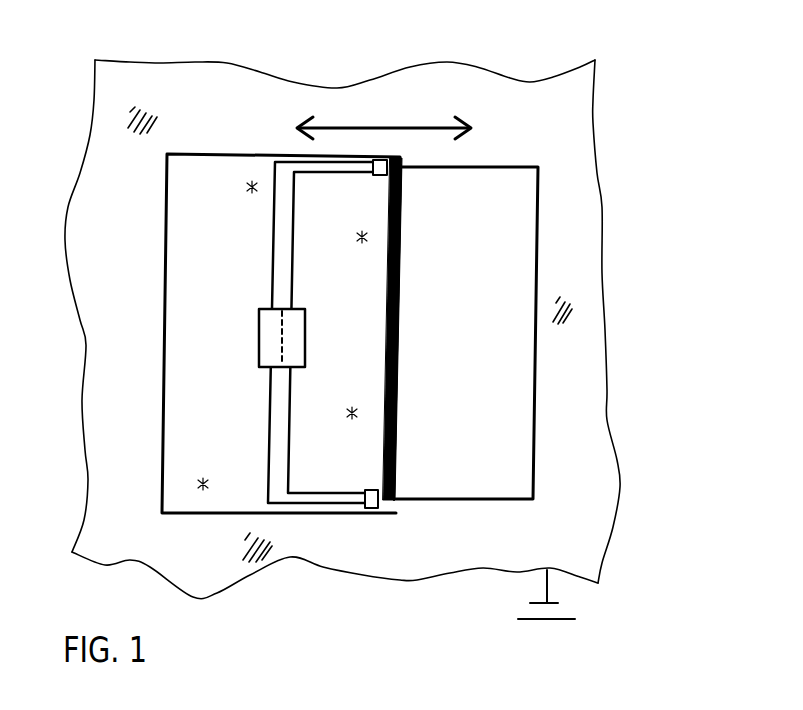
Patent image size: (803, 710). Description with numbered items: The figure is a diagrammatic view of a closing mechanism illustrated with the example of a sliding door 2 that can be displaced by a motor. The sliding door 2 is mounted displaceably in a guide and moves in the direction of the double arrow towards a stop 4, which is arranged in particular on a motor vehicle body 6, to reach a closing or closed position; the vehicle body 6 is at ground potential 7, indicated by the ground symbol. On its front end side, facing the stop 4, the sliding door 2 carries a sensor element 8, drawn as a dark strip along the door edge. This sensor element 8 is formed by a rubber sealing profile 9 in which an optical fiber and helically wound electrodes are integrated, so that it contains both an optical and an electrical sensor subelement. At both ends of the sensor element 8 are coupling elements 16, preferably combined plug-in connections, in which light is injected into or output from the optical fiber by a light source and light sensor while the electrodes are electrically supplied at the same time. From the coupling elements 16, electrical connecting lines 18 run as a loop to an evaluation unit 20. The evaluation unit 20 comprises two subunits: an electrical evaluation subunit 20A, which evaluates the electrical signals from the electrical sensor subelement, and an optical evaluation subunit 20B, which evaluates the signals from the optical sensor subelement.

The sliding door 2 is at (212, 254).
The stop 4 is at (538, 258).
The motor vehicle body 6 is at (583, 470).
The ground potential 7 is at (585, 613).
The sensor element 8 is at (402, 249).
The rubber sealing profile 9 is at (402, 320).
The coupling elements 16 is at (382, 157).
The electrical connecting lines 18 is at (267, 240).
The evaluation unit 20 is at (280, 343).
The electrical evaluation subunit 20A is at (268, 327).
The optical evaluation subunit 20B is at (295, 342).